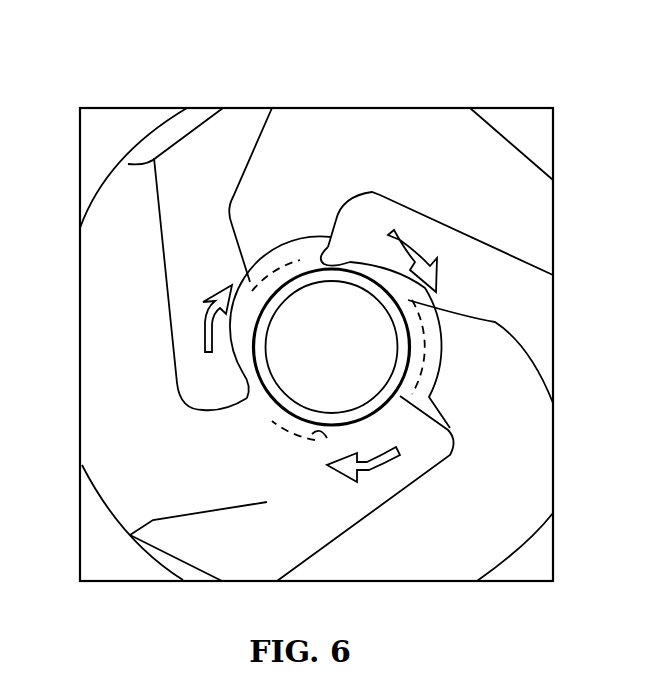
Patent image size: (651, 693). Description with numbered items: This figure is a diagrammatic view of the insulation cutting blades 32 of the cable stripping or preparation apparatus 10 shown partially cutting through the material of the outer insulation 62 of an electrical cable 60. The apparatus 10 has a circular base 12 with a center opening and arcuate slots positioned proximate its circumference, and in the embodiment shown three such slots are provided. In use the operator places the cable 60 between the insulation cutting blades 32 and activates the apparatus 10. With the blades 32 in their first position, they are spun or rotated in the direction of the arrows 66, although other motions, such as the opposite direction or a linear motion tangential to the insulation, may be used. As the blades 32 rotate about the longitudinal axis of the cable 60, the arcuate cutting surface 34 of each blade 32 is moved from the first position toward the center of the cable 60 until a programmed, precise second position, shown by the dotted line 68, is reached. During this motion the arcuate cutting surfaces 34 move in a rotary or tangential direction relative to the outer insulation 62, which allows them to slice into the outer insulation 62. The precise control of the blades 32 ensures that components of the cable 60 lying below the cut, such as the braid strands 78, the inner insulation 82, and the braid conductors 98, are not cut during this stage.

The cable stripping or preparation apparatus 10 is at (365, 67).
The circular base 12 is at (502, 158).
The insulation cutting blades 32 is at (203, 363).
The arcuate cutting surface 34 is at (332, 263).
The electrical cable 60 is at (443, 380).
The outer insulation 62 is at (432, 330).
The arrows 66 is at (203, 323).
The dotted line 68 is at (262, 430).
The braid strands 78 is at (410, 350).
The inner insulation 82 is at (283, 282).
The braid conductors 98 is at (306, 278).